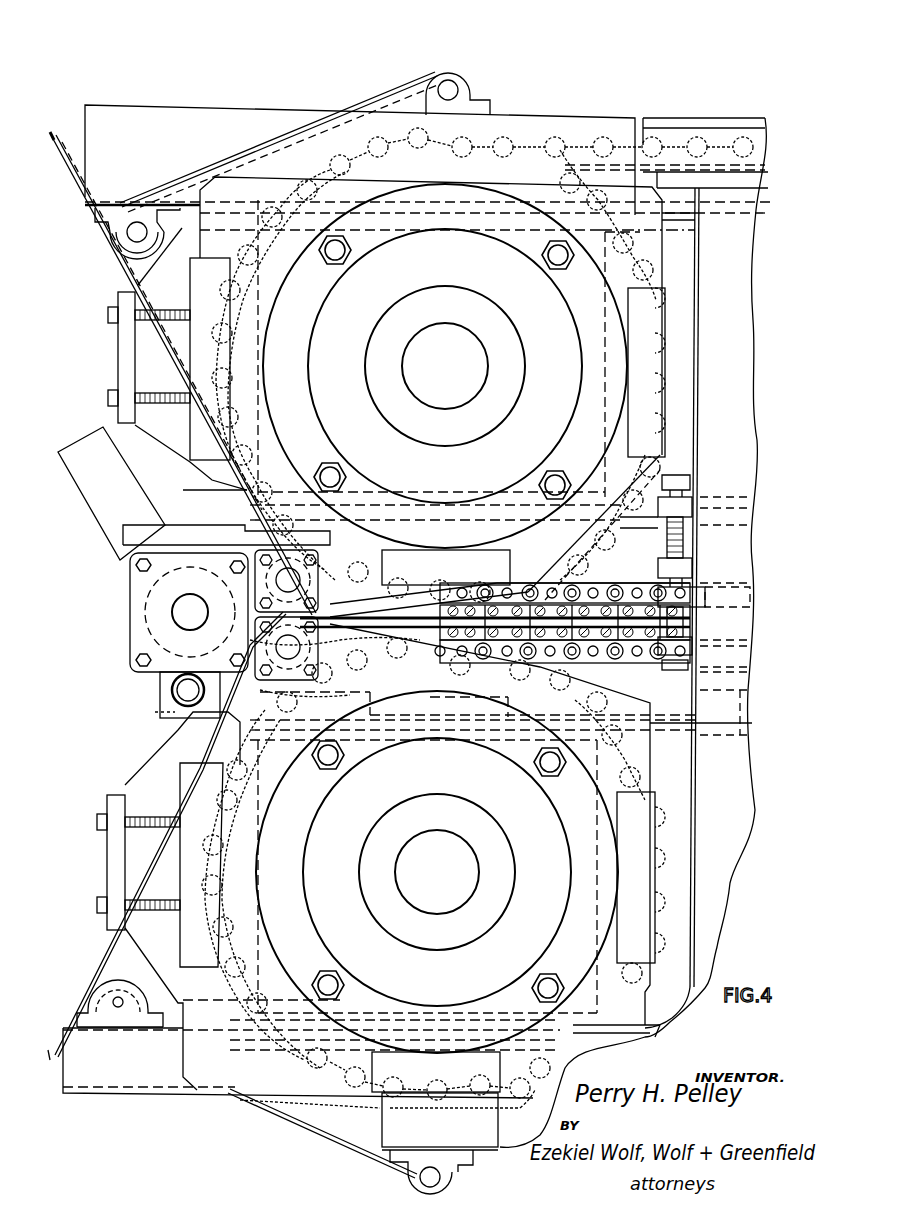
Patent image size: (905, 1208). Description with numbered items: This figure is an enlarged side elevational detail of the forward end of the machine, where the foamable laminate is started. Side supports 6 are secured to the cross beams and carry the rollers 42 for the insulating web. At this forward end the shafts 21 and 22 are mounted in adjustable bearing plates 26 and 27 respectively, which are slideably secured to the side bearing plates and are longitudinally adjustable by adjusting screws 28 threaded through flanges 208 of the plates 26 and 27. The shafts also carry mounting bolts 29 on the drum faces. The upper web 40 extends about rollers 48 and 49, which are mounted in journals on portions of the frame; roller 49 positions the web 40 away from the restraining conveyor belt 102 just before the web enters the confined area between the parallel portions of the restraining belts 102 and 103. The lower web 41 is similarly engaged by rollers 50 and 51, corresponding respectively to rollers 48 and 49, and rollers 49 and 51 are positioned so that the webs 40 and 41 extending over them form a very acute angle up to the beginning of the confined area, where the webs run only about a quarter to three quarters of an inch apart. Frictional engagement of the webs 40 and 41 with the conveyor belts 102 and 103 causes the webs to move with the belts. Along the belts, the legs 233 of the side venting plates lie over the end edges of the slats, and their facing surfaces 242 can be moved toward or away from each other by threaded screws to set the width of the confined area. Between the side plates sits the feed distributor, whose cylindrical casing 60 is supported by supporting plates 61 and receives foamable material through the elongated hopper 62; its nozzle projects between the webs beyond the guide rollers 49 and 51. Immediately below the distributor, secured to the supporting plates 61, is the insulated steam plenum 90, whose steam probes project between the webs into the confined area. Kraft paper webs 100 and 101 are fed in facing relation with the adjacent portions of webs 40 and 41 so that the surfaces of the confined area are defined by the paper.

The side supports 6 is at (700, 152).
The shaft 21 is at (452, 370).
The shaft 22 is at (446, 888).
The adjustable bearing plate 26 is at (135, 430).
The adjustable bearing plate 27 is at (152, 760).
The adjusting screw 28 is at (152, 320).
The drum mounting bolt 29 is at (357, 368).
The web 40 is at (382, 108).
The lower web 41 is at (275, 1120).
The roller 42 is at (460, 92).
The roller 48 is at (118, 240).
The roller 49 is at (263, 588).
The roller 50 is at (103, 985).
The roller 51 is at (352, 677).
The casing 60 is at (145, 604).
The supporting plate 61 is at (181, 524).
The hopper 62 is at (77, 447).
The steam plenum 90 is at (158, 692).
The paper web 100 is at (55, 135).
The paper web 101 is at (157, 836).
The restraining conveyor belt 102 is at (195, 262).
The lower endless belt 103 is at (238, 962).
The flange 208 is at (150, 302).
The leg 233 is at (637, 634).
The facing surface 242 is at (607, 605).